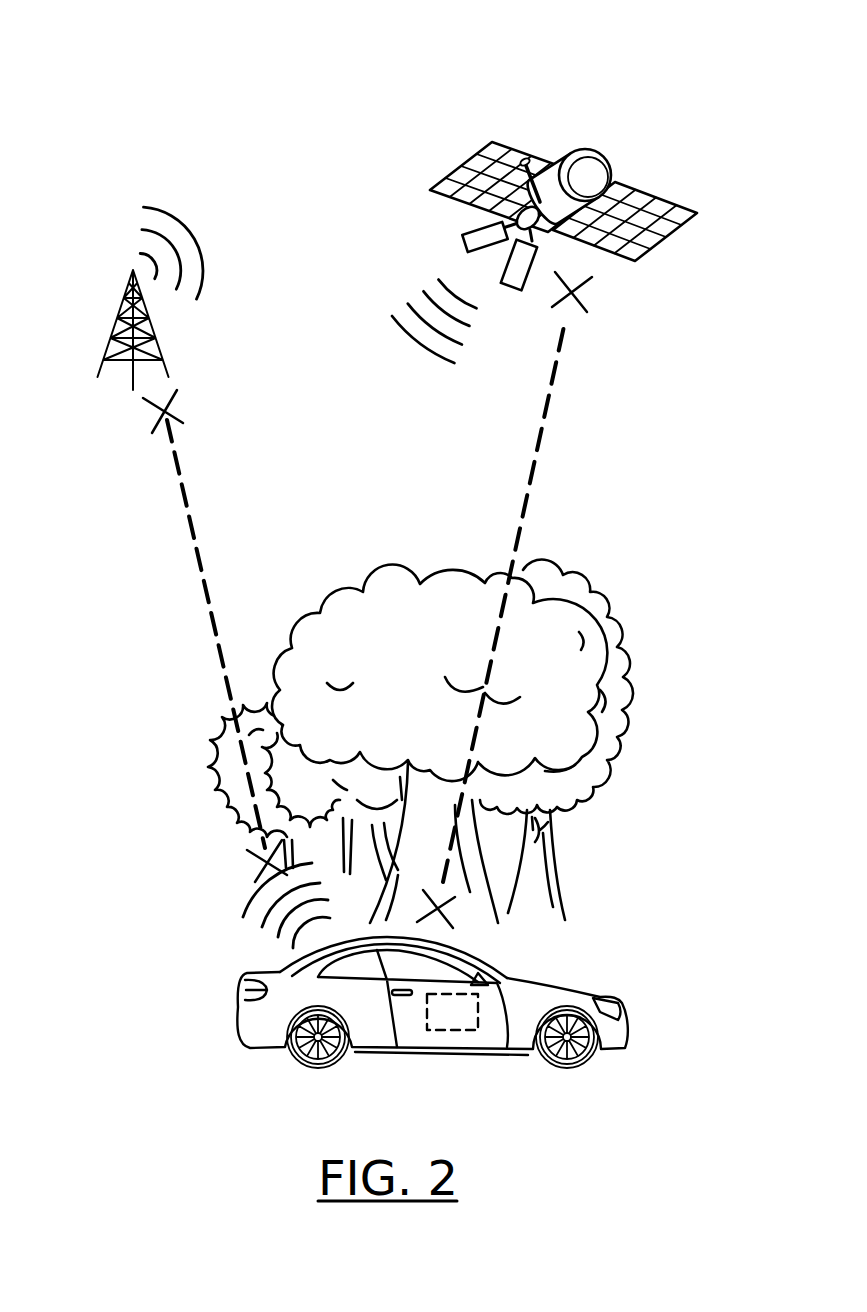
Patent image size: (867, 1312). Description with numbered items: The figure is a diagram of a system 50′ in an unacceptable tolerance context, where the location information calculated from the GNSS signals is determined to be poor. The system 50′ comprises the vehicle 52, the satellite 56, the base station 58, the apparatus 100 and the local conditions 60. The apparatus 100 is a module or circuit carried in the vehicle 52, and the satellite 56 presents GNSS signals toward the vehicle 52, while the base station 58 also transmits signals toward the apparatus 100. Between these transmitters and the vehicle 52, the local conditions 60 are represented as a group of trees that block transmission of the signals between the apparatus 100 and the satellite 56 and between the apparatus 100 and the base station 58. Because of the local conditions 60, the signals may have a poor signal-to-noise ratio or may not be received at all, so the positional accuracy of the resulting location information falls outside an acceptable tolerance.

The system in an unacceptable tolerance context 50′ is at (296, 52).
The vehicle 52 is at (474, 952).
The satellite 56 is at (672, 200).
The base station 58 is at (128, 290).
The local conditions 60 is at (587, 594).
The apparatus 100 is at (460, 1033).